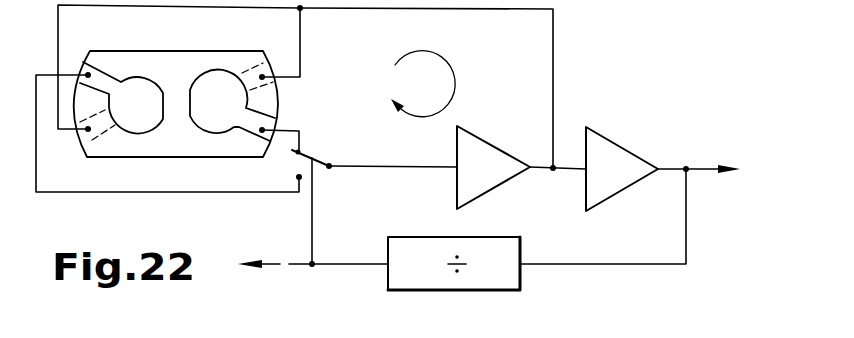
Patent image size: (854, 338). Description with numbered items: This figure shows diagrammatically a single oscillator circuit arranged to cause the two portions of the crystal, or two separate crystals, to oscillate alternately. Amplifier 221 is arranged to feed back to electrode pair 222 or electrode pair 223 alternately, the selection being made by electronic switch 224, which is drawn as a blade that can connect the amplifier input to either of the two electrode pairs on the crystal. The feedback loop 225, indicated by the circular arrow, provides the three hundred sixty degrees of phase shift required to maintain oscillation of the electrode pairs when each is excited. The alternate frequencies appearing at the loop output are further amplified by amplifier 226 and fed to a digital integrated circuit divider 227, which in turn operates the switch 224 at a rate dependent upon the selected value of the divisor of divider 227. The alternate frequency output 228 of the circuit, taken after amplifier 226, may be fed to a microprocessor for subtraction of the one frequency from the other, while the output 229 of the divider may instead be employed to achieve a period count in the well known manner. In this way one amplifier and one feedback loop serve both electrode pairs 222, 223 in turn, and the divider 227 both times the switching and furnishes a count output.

The amplifier 221 is at (480, 136).
The electrode pair 222 is at (132, 73).
The electrode pair 223 is at (218, 73).
The electronic switch 224 is at (317, 158).
The feedback loop 225 is at (454, 80).
The amplifier 226 is at (615, 138).
The digital integrated circuit divider 227 is at (520, 280).
The alternate frequency output 228 is at (702, 168).
The output of the divider 229 is at (272, 261).